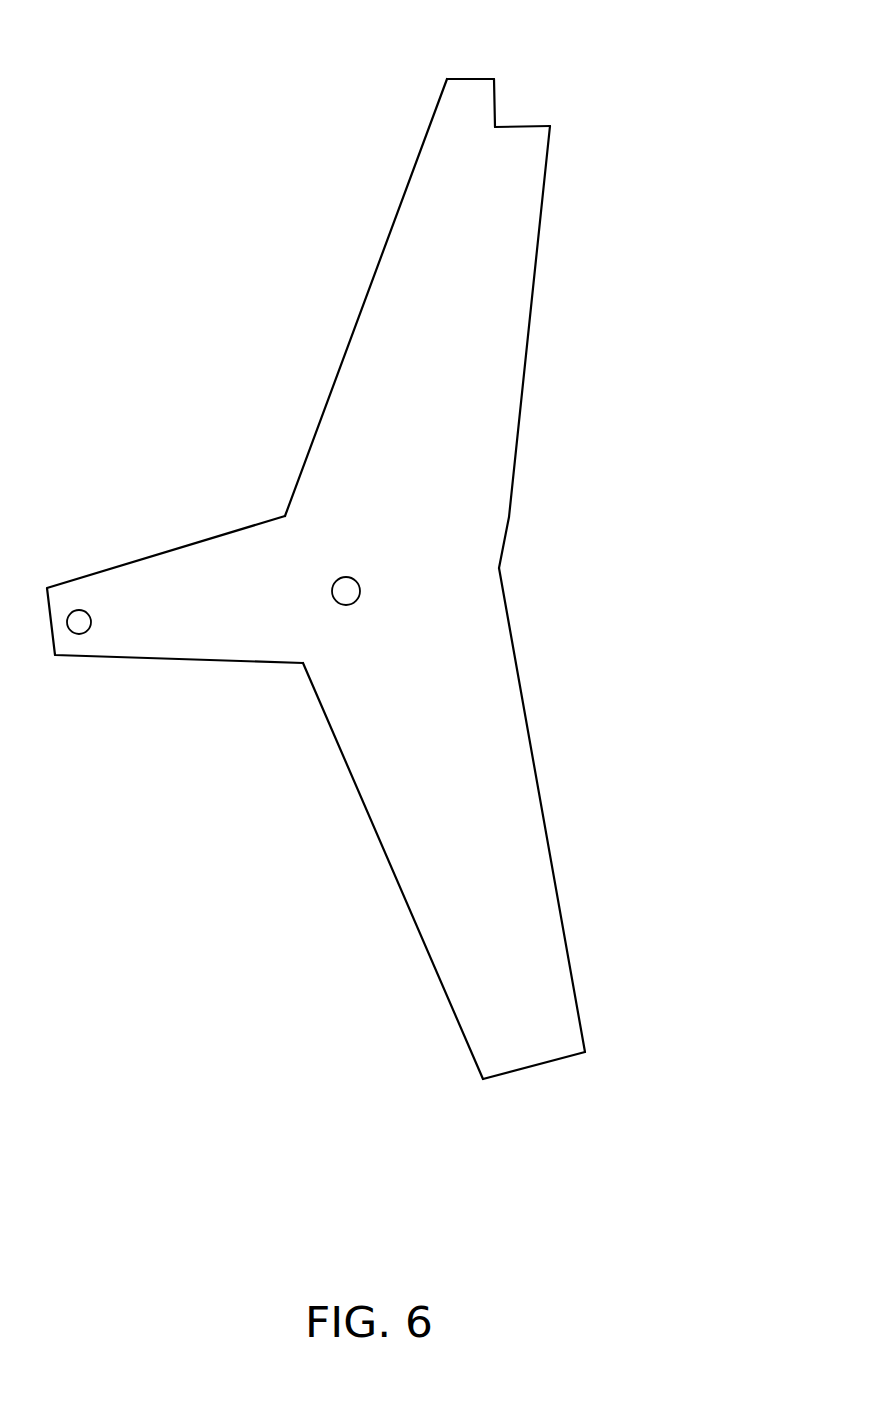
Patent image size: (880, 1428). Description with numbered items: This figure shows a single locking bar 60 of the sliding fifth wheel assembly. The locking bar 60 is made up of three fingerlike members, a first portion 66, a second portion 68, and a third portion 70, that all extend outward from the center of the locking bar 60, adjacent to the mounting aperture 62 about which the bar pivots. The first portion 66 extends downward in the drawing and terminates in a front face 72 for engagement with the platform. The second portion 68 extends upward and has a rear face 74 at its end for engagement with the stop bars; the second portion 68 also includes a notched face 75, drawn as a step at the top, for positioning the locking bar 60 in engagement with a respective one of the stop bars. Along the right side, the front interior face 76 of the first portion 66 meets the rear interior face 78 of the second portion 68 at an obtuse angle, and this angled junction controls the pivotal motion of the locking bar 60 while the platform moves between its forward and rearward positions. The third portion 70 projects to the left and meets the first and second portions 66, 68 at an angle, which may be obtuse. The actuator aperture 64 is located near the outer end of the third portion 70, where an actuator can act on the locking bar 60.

The locking bar 60 is at (103, 233).
The mounting aperture 62 is at (342, 595).
The actuator aperture 64 is at (83, 632).
The first portion 66 is at (547, 939).
The second portion 68 is at (503, 313).
The third portion 70 is at (168, 575).
The front face 72 is at (537, 1068).
The rear face 74 is at (535, 123).
The notched face 75 is at (497, 97).
The front interior face 76 is at (527, 702).
The rear interior face 78 is at (509, 517).